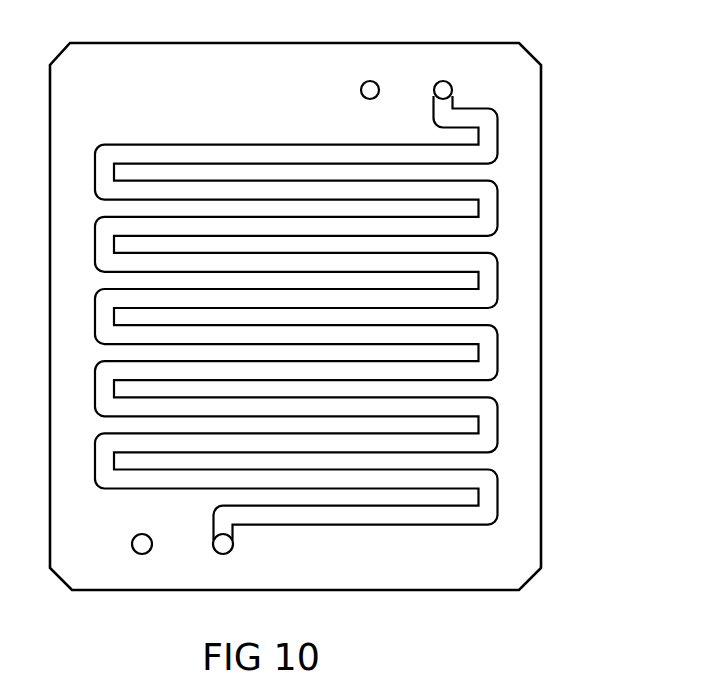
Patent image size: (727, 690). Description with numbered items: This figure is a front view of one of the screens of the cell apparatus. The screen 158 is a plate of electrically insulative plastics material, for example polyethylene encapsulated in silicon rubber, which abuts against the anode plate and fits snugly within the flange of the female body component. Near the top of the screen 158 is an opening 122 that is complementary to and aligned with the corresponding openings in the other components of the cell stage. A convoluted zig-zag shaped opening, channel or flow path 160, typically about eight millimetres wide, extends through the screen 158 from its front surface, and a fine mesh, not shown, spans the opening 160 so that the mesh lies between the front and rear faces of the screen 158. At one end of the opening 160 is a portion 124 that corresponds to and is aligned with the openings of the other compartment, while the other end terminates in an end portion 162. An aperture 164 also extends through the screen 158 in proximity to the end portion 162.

The screen 158 is at (382, 565).
The convoluted zig-zag shaped opening 160 is at (483, 280).
The opening 122 is at (371, 89).
The end portion of opening 124 is at (445, 89).
The end portion of opening 162 is at (223, 552).
The aperture 164 is at (142, 552).